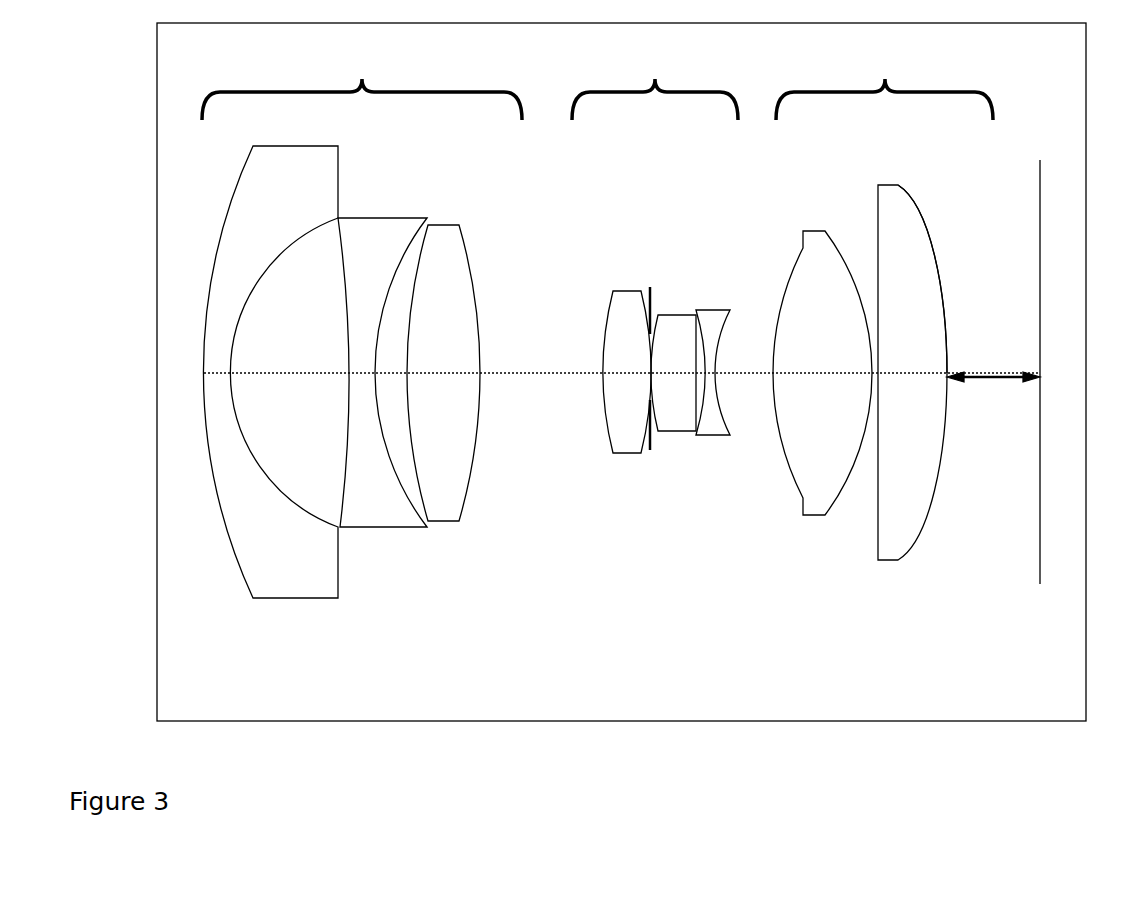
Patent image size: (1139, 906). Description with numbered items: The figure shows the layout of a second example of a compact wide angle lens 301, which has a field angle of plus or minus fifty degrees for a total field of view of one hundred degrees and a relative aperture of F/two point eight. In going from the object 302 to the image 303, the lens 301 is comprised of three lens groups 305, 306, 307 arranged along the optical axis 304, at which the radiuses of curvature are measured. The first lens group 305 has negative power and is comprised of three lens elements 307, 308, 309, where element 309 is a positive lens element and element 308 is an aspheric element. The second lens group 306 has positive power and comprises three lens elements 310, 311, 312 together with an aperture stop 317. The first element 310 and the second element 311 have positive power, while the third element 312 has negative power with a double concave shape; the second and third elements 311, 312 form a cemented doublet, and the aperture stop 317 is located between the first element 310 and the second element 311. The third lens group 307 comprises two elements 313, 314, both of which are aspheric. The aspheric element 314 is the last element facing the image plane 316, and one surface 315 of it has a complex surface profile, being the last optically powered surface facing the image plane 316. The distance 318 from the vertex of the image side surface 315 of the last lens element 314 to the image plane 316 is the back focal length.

The lens 301 is at (545, 764).
The object 302 is at (129, 381).
The image 303 is at (1110, 376).
The optical axis 304 is at (543, 367).
The first lens group 305 is at (362, 86).
The second lens group 306 is at (655, 86).
The third lens group 307 is at (598, 358).
The aspheric element 308 is at (376, 529).
The positive lens element 309 is at (443, 401).
The first element of second lens group 310 is at (619, 400).
The second element of second lens group 311 is at (670, 437).
The third element of second lens group 312 is at (715, 435).
The lens element of third lens group 313 is at (816, 392).
The aspheric element 314 is at (899, 400).
The complex aspheric surface 315 is at (952, 262).
The image plane 316 is at (1039, 584).
The aperture stop 317 is at (652, 283).
The back focal length distance 318 is at (994, 390).